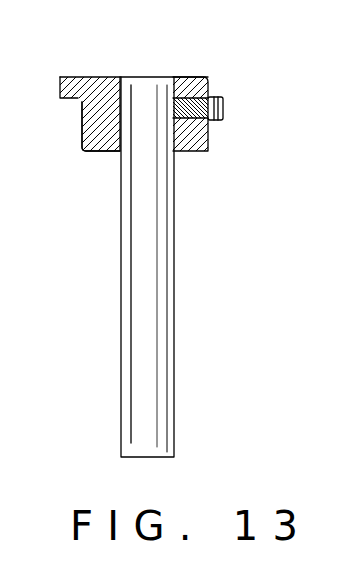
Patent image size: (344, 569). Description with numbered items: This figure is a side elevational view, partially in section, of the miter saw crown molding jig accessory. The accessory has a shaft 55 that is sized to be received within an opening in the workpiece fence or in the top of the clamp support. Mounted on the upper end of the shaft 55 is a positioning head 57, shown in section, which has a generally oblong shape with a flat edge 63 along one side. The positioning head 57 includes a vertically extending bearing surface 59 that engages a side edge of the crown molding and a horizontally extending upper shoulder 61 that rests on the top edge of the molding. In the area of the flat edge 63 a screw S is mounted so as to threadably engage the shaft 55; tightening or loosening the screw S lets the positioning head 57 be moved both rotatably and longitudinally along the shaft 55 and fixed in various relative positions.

The shaft 55 is at (152, 297).
The positioning head 57 is at (107, 76).
The vertically extending bearing surface 59 is at (82, 120).
The horizontally extending upper shoulder 61 is at (60, 78).
The flat edge 63 is at (208, 80).
The screw S is at (226, 117).